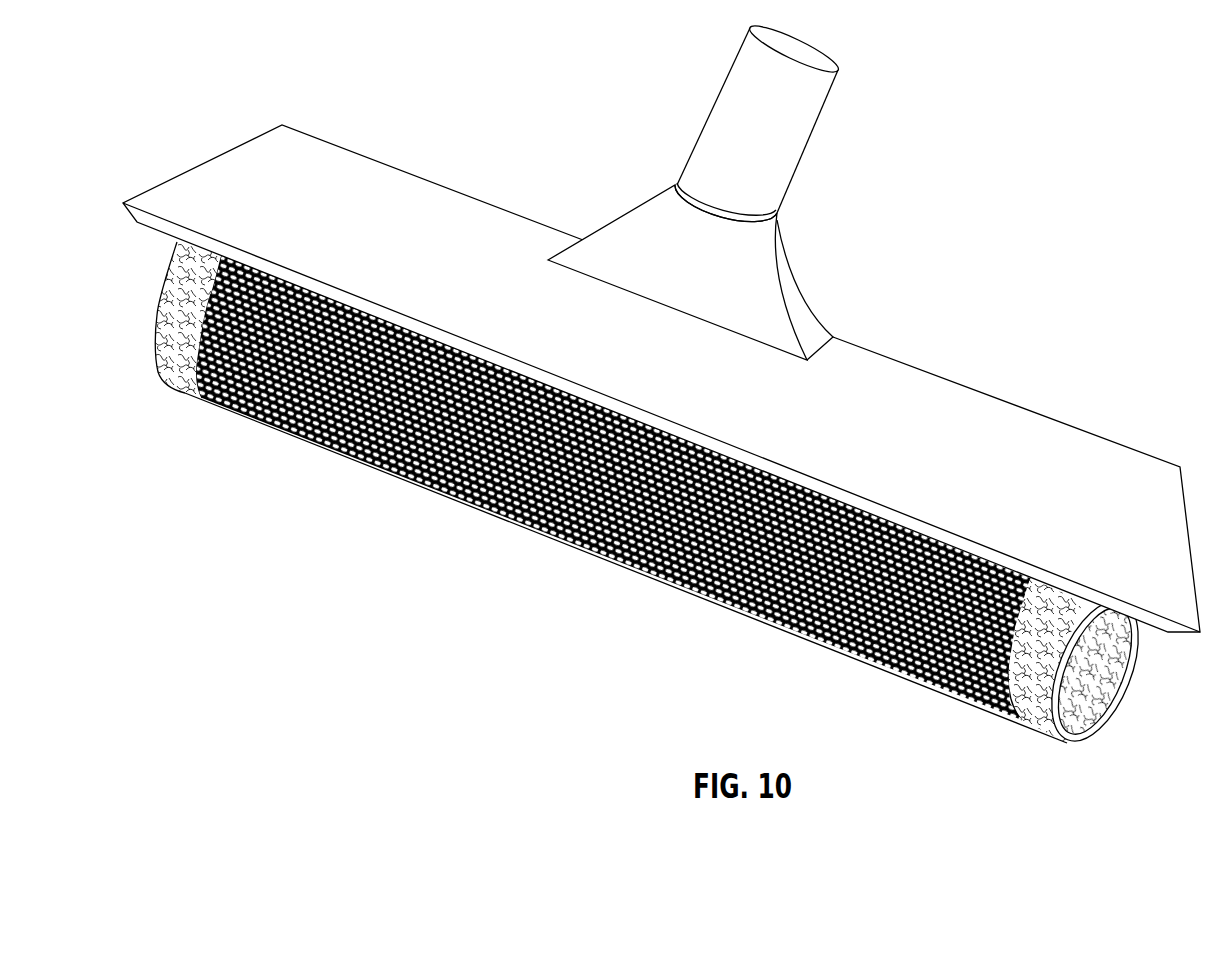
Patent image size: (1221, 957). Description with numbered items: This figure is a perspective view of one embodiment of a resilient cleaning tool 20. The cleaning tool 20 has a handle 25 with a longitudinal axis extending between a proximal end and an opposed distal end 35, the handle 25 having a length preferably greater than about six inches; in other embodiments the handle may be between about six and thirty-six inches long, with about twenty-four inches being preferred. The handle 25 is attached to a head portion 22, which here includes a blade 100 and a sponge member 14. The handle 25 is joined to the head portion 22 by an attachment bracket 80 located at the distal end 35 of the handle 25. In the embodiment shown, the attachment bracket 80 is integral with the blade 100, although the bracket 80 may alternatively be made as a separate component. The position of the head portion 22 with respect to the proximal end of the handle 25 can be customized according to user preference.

The cleaning tool 20 is at (661, 386).
The head portion 22 is at (733, 634).
The sponge member 14 is at (530, 530).
The blade 100 is at (1098, 434).
The attachment bracket 80 is at (637, 217).
The distal end 35 is at (789, 204).
The handle 25 is at (822, 113).